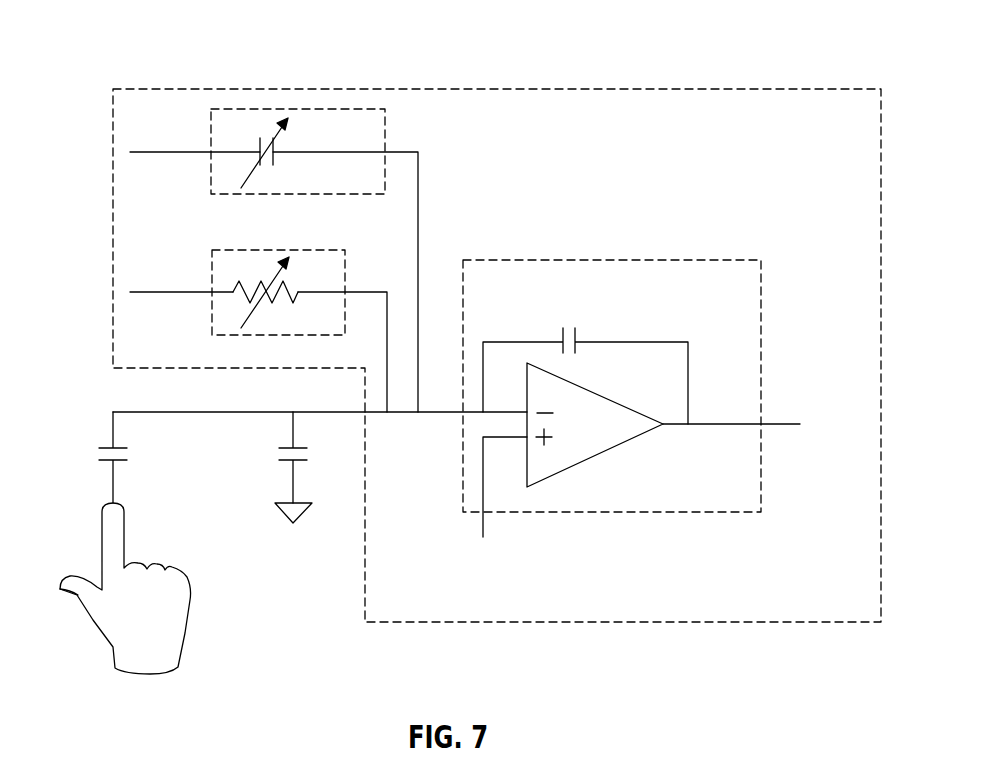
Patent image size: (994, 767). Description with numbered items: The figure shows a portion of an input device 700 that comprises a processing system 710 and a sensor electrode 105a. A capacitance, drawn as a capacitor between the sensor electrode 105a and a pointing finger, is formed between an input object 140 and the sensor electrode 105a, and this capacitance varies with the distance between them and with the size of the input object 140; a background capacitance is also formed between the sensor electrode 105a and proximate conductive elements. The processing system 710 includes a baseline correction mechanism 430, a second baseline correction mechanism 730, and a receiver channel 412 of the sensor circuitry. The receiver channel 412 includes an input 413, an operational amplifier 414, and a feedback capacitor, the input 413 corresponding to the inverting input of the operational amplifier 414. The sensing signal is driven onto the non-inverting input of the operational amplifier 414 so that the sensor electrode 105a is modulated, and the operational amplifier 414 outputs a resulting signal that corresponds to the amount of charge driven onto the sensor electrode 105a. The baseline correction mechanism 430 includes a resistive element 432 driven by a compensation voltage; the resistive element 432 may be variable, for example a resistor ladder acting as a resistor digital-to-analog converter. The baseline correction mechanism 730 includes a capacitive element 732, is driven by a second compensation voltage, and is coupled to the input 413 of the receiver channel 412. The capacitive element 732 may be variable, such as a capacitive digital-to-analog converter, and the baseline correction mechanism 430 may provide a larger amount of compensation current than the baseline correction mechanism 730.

The input device 700 is at (118, 34).
The processing system 710 is at (853, 91).
The baseline correction mechanism 730 is at (385, 137).
The capacitive element 732 is at (267, 135).
The baseline correction mechanism 430 is at (315, 250).
The resistive element 432 is at (240, 297).
The receiver channel 412 is at (723, 260).
The input 413 is at (432, 413).
The operational amplifier 414 is at (595, 453).
The sensor electrode 105a is at (130, 411).
The input object 140 is at (110, 645).